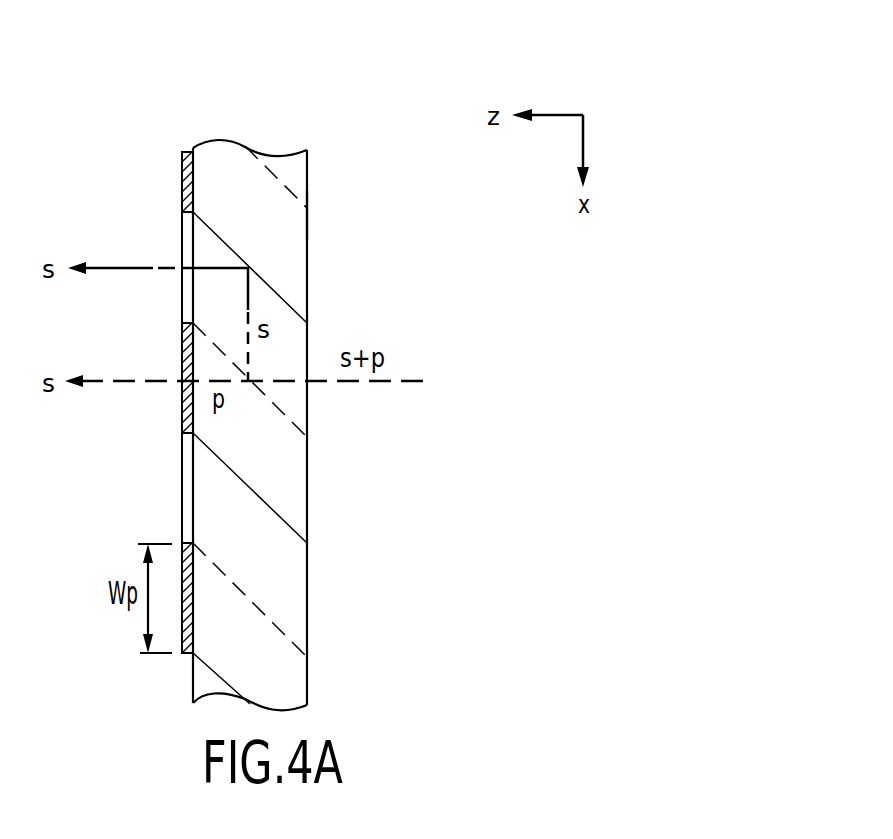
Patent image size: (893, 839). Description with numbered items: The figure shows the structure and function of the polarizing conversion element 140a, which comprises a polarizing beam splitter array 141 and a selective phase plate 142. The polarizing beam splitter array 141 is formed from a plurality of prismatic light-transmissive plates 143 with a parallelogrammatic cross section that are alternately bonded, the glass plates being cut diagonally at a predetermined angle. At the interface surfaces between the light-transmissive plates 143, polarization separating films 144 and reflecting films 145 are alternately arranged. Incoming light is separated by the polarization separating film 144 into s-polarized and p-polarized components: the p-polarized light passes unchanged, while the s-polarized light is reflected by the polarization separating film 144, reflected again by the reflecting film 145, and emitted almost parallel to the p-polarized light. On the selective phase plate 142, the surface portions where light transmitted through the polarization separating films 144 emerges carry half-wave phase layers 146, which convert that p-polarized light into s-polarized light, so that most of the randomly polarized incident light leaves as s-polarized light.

The polarizing conversion element 140a is at (386, 95).
The polarizing beam splitter array 141 is at (305, 122).
The selective phase plate 142 is at (189, 150).
The light-transmissive plate 143 is at (307, 213).
The polarization separating film 144 is at (282, 410).
The reflecting film 145 is at (283, 303).
The λ/2 phase layer 146 is at (182, 182).